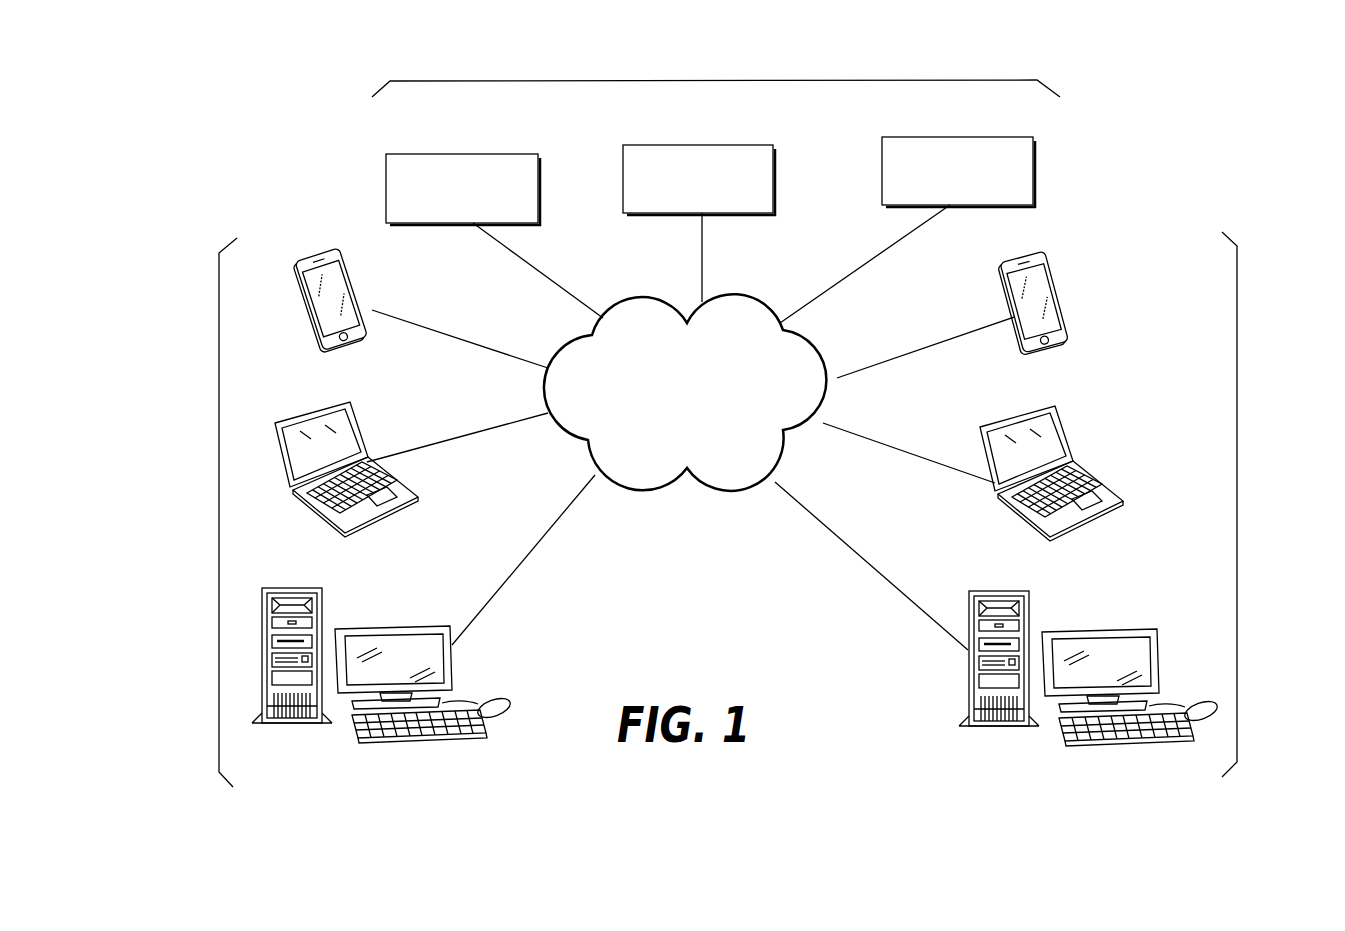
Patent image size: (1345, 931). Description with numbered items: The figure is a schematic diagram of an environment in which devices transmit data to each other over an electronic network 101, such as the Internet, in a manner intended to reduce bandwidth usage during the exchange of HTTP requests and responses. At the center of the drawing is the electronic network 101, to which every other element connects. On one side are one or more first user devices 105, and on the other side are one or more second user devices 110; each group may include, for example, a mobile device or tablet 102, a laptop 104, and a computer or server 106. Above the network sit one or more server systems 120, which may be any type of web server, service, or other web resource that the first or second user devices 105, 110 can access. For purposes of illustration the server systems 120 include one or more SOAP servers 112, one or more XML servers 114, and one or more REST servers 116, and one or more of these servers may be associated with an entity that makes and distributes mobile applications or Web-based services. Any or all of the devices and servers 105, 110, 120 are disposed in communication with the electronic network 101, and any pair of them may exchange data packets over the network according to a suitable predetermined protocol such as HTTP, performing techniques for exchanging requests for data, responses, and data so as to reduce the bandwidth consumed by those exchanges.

The electronic network 101 is at (823, 352).
The mobile device or tablet 102 is at (365, 298).
The laptop 104 is at (360, 433).
The computer or server 106 is at (372, 627).
The first user devices 105 is at (218, 477).
The second user devices 110 is at (1237, 564).
The SOAP servers 112 is at (470, 154).
The XML servers 114 is at (718, 145).
The REST servers 116 is at (940, 137).
The server systems 120 is at (708, 80).